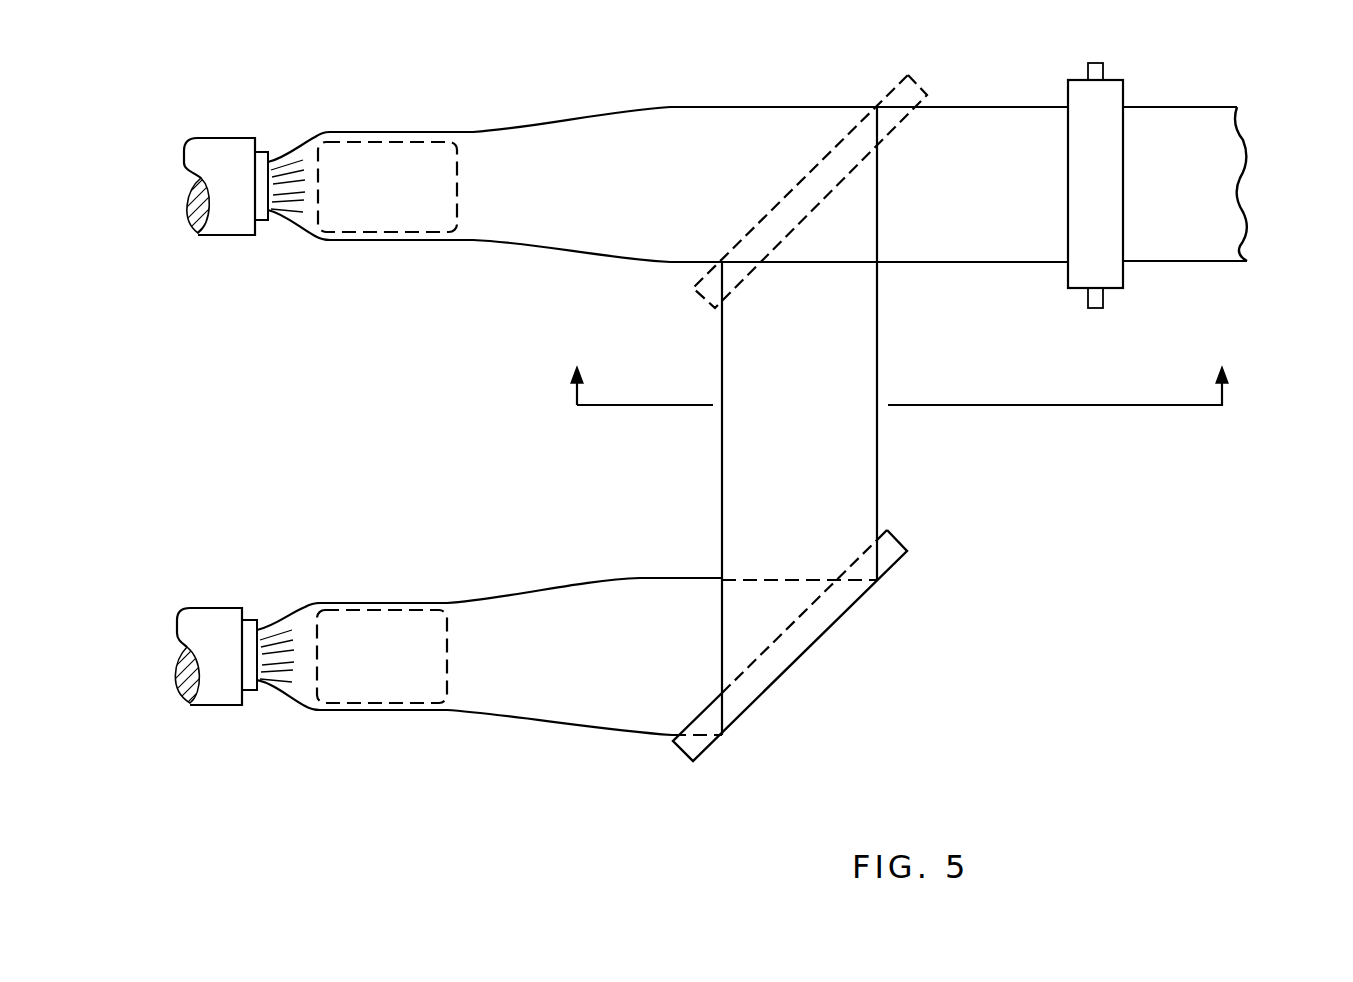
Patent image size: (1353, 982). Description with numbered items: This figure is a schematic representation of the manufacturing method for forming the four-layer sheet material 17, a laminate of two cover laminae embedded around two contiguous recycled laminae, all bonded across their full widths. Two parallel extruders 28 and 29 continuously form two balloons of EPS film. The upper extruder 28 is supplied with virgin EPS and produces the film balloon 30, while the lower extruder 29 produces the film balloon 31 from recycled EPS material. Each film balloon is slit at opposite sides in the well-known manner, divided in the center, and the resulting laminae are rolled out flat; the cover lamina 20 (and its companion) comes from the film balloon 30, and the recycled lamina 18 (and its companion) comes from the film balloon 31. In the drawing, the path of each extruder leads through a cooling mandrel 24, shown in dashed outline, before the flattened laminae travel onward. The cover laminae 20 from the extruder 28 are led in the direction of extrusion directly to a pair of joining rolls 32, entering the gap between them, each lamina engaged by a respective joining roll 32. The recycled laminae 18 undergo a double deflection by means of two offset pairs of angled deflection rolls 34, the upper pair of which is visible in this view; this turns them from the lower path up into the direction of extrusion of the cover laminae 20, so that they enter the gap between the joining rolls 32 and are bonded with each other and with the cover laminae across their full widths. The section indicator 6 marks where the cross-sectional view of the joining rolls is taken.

The section line 6- 6 is at (899, 376).
The four-layer sheet material 17 is at (1213, 202).
The recycled lamina 18 is at (809, 438).
The cover lamina 20 is at (687, 187).
The cooling mandrel 24 is at (380, 220).
The extruder 28 is at (220, 148).
The extruder 29 is at (226, 615).
The film balloon 30 is at (473, 241).
The film balloon 31 is at (450, 712).
The joining rolls 32 is at (1125, 90).
The angled deflection rolls 34 is at (908, 93).